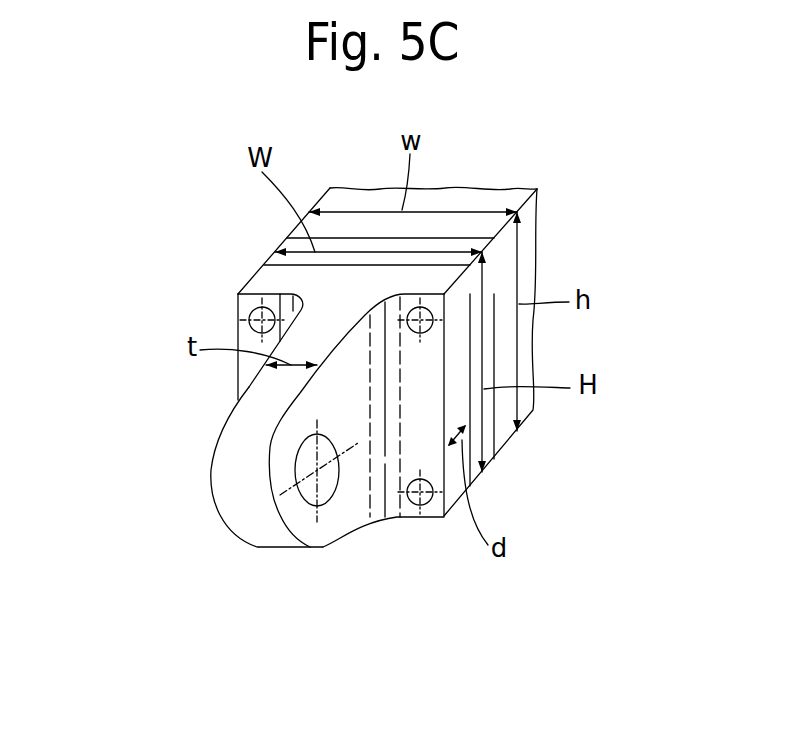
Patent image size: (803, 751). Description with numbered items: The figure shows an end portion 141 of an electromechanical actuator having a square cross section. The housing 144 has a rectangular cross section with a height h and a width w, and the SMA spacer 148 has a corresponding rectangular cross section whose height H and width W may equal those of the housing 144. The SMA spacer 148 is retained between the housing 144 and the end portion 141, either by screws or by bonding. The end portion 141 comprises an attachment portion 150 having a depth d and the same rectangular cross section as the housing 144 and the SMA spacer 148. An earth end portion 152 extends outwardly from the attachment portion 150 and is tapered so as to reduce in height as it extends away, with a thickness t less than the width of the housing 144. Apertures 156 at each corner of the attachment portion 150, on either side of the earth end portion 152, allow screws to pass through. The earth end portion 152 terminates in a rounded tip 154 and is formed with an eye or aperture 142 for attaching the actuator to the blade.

The end portion 141 is at (196, 393).
The eye or aperture 142 is at (305, 499).
The housing 144 is at (493, 186).
The SMA spacer 148 is at (486, 463).
The attachment portion 150 is at (266, 290).
The earth end portion 152 is at (329, 538).
The rounded tip 154 is at (244, 525).
The apertures 156 is at (250, 316).